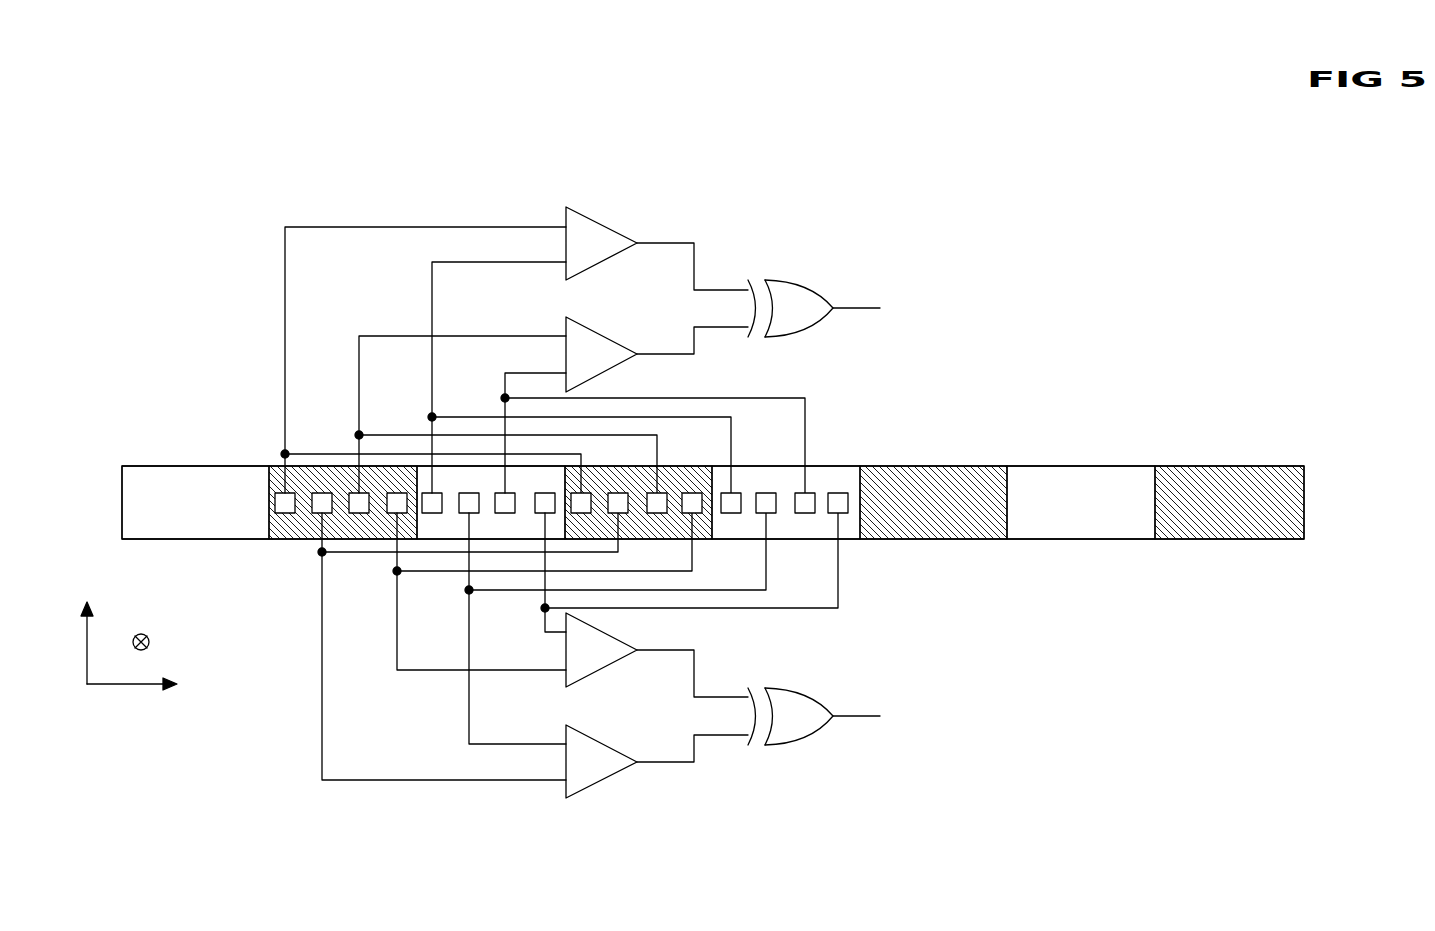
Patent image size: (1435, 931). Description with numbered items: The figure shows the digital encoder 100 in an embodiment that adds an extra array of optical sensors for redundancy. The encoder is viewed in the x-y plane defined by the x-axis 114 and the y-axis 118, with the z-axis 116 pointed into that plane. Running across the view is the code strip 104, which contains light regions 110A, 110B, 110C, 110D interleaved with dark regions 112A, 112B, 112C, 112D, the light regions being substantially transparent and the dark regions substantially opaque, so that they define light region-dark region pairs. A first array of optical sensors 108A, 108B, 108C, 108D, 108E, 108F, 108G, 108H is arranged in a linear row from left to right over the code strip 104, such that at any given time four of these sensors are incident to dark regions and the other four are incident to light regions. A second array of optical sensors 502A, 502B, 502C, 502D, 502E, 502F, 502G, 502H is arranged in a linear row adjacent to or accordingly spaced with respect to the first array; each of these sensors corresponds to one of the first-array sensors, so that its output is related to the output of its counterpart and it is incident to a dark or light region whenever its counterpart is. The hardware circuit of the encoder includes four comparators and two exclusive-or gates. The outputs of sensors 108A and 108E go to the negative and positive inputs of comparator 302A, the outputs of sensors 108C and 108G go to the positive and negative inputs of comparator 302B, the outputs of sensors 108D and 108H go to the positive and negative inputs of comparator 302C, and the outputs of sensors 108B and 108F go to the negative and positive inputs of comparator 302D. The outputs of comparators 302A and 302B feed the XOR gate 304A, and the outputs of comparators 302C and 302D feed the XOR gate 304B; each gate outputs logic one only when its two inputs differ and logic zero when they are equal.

The digital encoder 100 is at (177, 164).
The code strip 104 is at (1304, 515).
The optical sensor 108A is at (275, 500).
The optical sensor 108B is at (318, 490).
The optical sensor 108C is at (353, 515).
The optical sensor 108D is at (398, 490).
The optical sensor 108E is at (438, 490).
The optical sensor 108F is at (466, 515).
The optical sensor 108G is at (506, 515).
The optical sensor 108H is at (546, 490).
The light region 110A is at (160, 470).
The light region 110B is at (425, 542).
The light region 110C is at (848, 540).
The light region 110D is at (1068, 485).
The dark region 112A is at (270, 540).
The dark region 112B is at (597, 540).
The dark region 112C is at (935, 490).
The dark region 112D is at (1225, 482).
The x-axis 114 is at (130, 690).
The z-axis 116 is at (150, 660).
The y-axis 118 is at (136, 587).
The comparator 302A is at (661, 189).
The comparator 302B is at (659, 297).
The comparator 302C is at (598, 670).
The comparator 302D is at (600, 780).
The exclusive-or gate 304A is at (826, 231).
The exclusive-or gate 304B is at (826, 639).
The optical sensor 502A is at (643, 452).
The optical sensor 502B is at (625, 545).
The optical sensor 502C is at (720, 452).
The optical sensor 502D is at (698, 545).
The optical sensor 502E is at (795, 452).
The optical sensor 502F is at (773, 545).
The optical sensor 502G is at (870, 452).
The optical sensor 502H is at (861, 545).